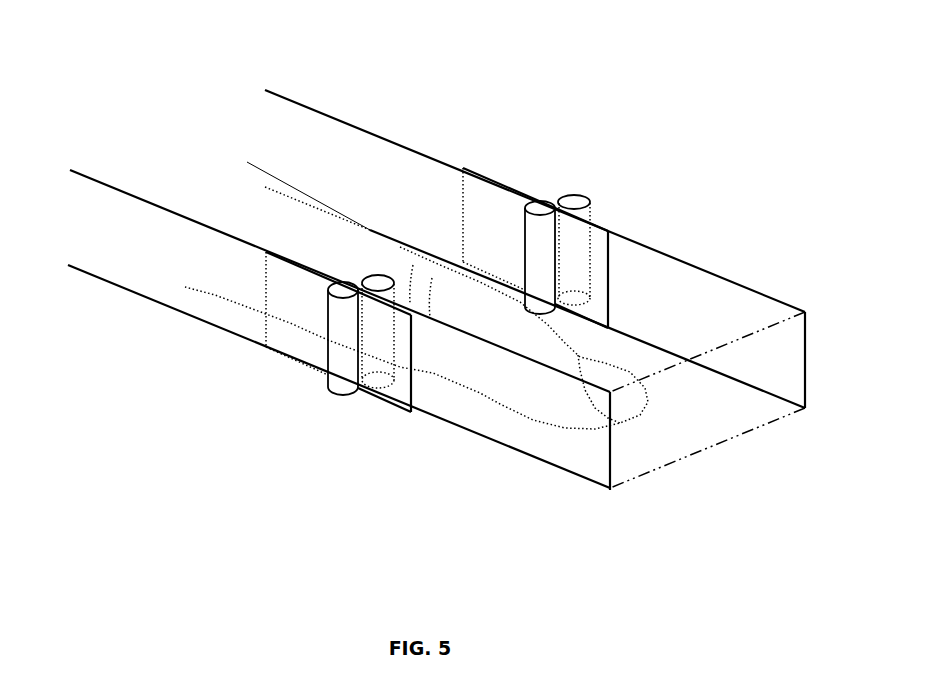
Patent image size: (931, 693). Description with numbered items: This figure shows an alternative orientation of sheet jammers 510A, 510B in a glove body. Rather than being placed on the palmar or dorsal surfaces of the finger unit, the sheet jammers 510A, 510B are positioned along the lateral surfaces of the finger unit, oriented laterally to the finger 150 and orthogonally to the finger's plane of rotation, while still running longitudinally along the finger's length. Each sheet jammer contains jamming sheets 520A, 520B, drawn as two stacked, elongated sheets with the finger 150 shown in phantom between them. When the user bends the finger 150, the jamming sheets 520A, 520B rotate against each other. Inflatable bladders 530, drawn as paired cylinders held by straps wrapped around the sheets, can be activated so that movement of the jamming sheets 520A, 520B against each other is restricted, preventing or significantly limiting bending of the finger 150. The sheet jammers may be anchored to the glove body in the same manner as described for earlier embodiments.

The sheet jammer 510A is at (250, 195).
The sheet jammer 510B is at (650, 500).
The jamming sheet 520A is at (382, 128).
The jamming sheet 520B is at (727, 277).
The inflatable bladders 530 is at (590, 196).
The finger 150 is at (495, 413).